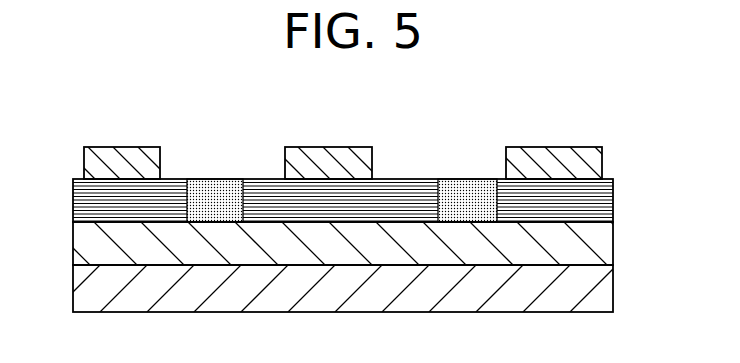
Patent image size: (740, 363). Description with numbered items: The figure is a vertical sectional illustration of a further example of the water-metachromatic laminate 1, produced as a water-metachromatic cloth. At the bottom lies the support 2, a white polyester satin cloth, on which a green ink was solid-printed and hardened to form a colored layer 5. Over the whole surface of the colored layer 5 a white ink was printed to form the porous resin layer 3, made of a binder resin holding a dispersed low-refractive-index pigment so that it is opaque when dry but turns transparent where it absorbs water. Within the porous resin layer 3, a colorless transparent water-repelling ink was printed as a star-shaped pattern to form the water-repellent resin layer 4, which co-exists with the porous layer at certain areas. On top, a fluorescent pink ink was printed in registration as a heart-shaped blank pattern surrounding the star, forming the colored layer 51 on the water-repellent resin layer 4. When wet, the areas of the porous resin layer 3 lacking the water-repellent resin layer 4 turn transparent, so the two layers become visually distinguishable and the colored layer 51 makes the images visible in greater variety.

The water-metachromatic laminate 1 is at (215, 138).
The support 2 is at (597, 293).
The porous resin layer 3 is at (465, 188).
The water-repellent resin layer 4 is at (613, 197).
The colored layer 5 is at (596, 247).
The colored layer 51 is at (592, 159).